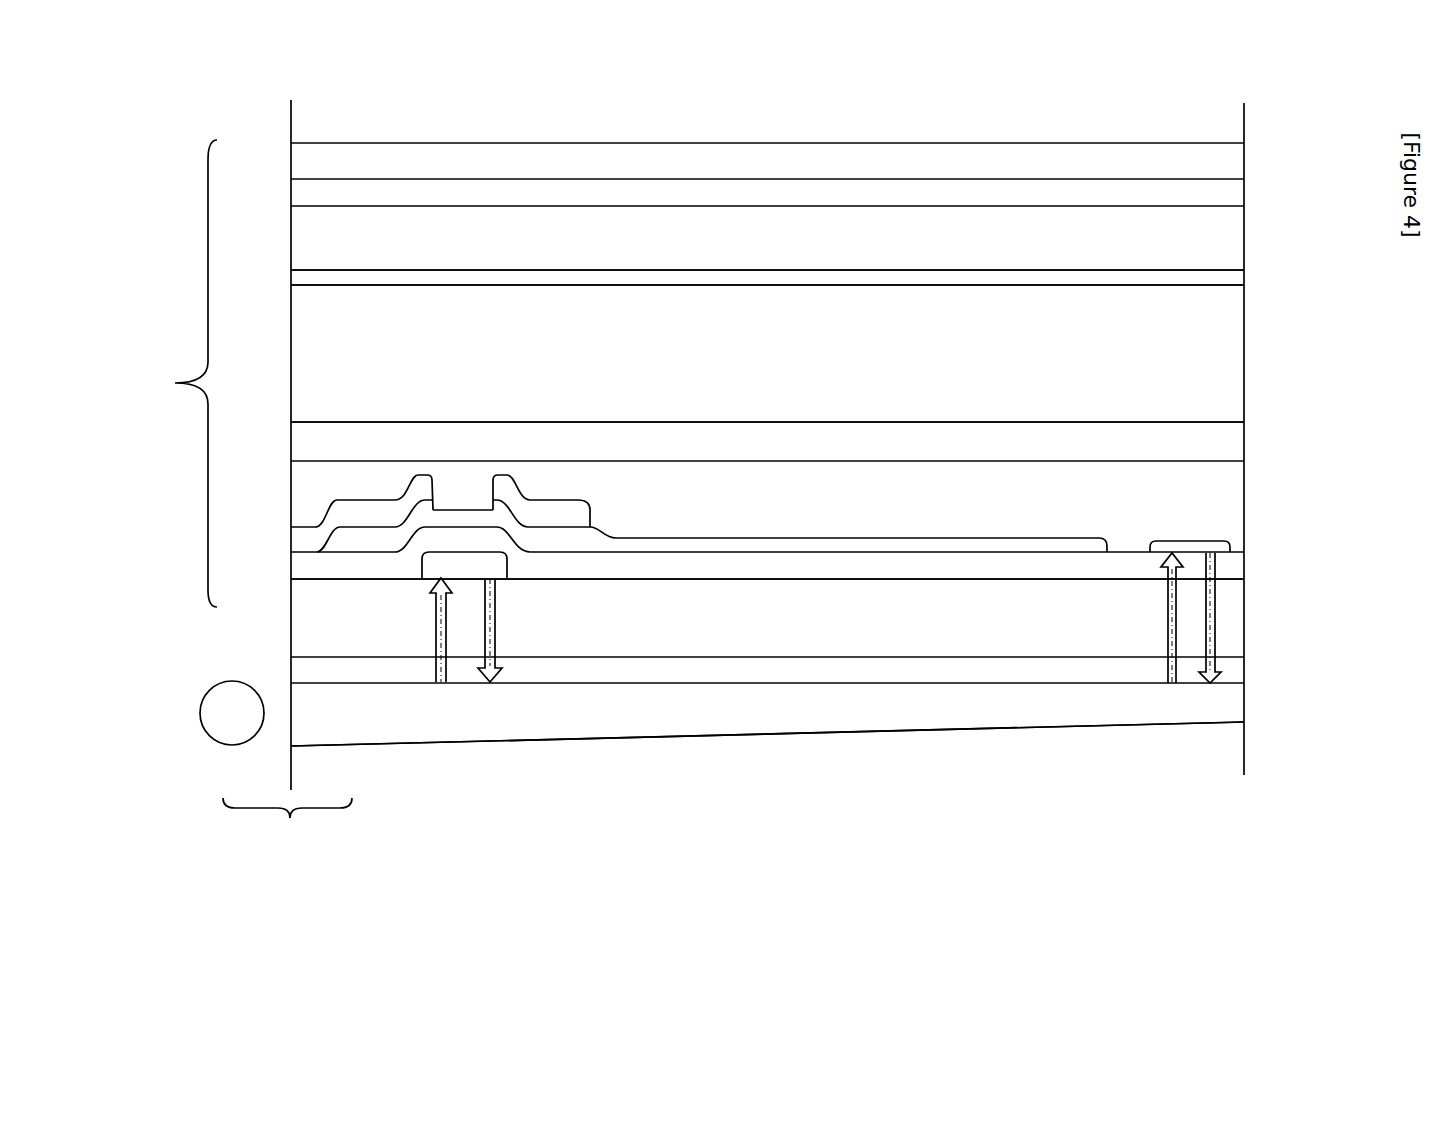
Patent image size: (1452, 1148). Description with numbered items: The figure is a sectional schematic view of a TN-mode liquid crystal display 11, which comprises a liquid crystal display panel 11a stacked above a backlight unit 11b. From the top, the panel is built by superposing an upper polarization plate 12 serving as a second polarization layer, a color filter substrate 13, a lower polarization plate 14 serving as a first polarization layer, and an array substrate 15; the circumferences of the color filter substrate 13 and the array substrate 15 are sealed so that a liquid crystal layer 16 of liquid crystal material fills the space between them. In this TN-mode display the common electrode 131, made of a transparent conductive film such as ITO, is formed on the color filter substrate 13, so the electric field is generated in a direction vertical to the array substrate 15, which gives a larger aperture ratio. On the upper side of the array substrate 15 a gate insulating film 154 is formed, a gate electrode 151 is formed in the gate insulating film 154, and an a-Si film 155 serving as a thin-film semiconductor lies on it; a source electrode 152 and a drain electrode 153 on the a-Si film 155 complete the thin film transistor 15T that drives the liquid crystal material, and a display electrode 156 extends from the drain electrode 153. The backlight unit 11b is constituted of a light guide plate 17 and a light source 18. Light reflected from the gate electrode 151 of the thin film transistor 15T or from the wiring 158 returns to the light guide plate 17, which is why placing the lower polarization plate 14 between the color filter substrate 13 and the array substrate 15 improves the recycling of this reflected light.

The TN-mode liquid crystal display 11 is at (707, 750).
The liquid crystal display panel 11a is at (689, 355).
The backlight unit 11b is at (733, 732).
The upper polarization plate 12 is at (291, 168).
The color filter substrate 13 is at (291, 258).
The common electrode 131 is at (1245, 280).
The liquid crystal layer 16 is at (290, 372).
The lower polarization plate 14 is at (290, 448).
The array substrate 15 is at (290, 618).
The thin film transistor 15T is at (733, 501).
The gate electrode 151 is at (492, 567).
The source electrode 152 is at (342, 511).
The drain electrode 153 is at (610, 552).
The gate insulating film 154 is at (317, 562).
The a-Si film 155 is at (583, 540).
The display electrode 156 is at (730, 538).
The wiring 158 is at (1178, 540).
The light guide plate 17 is at (327, 728).
The light source 18 is at (230, 732).